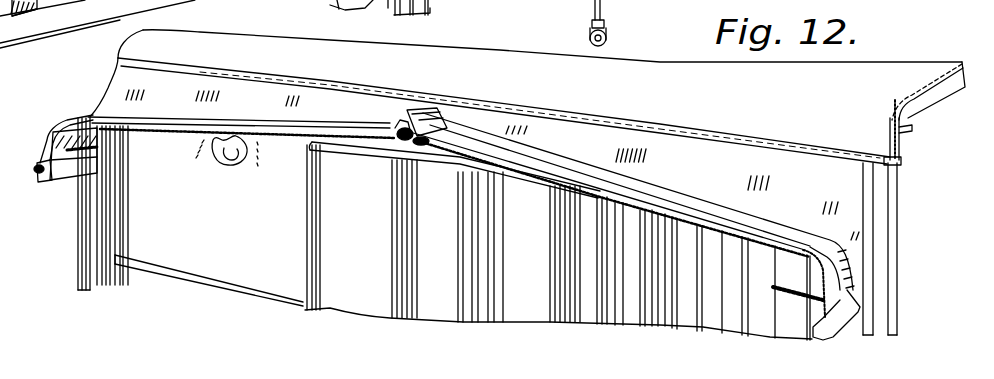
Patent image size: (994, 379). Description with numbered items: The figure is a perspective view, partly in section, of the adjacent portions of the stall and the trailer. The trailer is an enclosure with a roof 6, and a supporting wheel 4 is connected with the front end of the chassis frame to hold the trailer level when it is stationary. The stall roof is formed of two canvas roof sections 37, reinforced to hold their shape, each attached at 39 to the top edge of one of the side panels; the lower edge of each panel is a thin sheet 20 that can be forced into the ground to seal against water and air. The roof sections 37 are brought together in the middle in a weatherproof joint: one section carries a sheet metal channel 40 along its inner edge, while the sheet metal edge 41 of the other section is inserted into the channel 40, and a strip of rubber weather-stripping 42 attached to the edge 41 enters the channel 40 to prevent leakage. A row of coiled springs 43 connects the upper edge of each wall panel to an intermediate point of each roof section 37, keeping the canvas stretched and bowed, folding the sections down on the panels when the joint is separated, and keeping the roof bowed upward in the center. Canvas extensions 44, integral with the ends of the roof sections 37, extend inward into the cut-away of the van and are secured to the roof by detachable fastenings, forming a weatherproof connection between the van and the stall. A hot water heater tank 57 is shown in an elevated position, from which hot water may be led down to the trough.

The supporting wheel 4 is at (605, 36).
The roof 6 is at (873, 70).
The thin sheet 20 is at (12, 37).
The roof section 37 is at (165, 128).
The roof attachment 39 is at (47, 163).
The sheet metal channel 40 is at (418, 125).
The sheet metal edge 41 is at (418, 147).
The rubber weather-stripping 42 is at (408, 127).
The coiled spring 43 is at (125, 153).
The canvas extension 44 is at (597, 132).
The hot water heater tank 57 is at (173, 255).